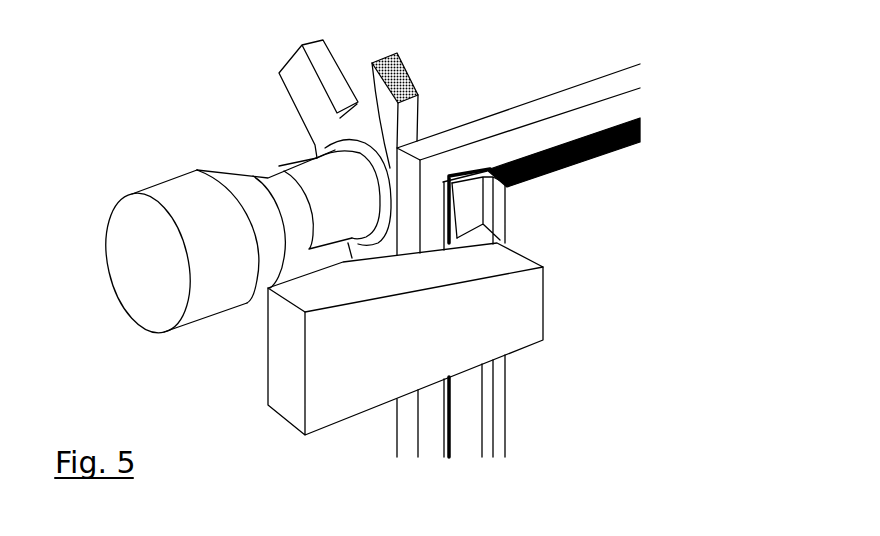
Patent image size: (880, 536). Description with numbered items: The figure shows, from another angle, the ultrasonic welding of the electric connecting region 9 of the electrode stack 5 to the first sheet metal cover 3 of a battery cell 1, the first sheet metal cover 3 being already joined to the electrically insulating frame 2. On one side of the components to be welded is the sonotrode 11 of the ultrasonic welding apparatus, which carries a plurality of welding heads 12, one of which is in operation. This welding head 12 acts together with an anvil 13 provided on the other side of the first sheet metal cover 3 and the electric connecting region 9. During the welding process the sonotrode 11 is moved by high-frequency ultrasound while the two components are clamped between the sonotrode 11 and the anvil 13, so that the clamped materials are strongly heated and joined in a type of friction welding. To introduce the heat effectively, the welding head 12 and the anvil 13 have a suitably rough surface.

The battery cell 1 is at (571, 271).
The frame 2 is at (533, 113).
The first sheet metal cover 3 is at (498, 112).
The electrode stack 5 is at (602, 225).
The electric connecting region 9 is at (467, 432).
The sonotrode 11 is at (190, 207).
The welding heads 12 is at (385, 95).
The anvil 13 is at (337, 372).